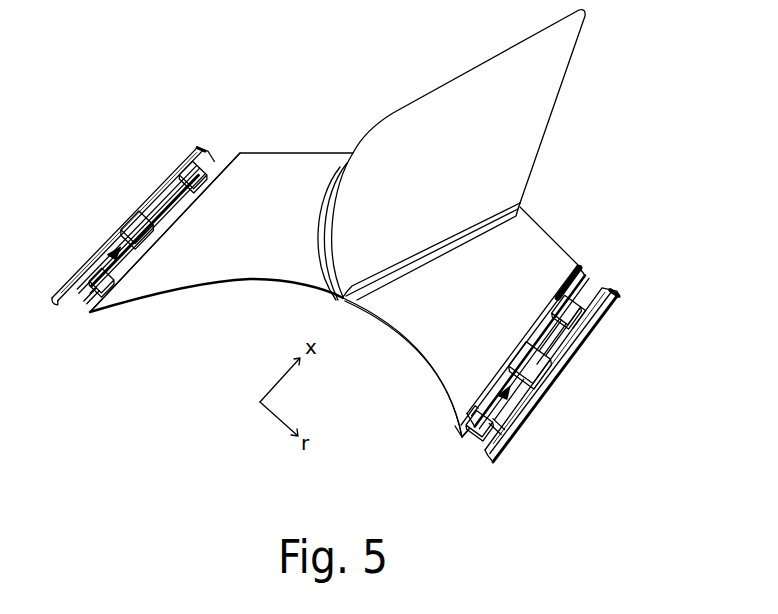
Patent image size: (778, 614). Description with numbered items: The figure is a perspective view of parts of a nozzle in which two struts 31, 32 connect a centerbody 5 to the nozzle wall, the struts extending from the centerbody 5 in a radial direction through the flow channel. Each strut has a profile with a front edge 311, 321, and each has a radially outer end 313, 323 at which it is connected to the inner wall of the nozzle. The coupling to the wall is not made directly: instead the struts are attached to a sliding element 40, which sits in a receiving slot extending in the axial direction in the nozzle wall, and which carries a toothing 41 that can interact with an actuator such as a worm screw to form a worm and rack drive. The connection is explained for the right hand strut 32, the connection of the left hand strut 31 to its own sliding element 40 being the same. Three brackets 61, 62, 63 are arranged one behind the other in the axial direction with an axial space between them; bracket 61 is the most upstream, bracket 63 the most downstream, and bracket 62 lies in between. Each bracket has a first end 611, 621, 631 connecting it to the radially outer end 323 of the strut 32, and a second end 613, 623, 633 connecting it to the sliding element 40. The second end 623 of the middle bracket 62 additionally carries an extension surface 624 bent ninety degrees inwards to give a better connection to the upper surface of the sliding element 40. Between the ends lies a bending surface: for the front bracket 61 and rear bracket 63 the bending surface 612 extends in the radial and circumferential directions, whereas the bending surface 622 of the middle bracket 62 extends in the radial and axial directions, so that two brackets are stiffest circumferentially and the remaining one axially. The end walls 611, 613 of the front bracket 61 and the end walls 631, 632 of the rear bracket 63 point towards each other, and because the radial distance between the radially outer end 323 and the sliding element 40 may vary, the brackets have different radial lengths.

The centerbody 5 is at (532, 144).
The strut 31 is at (195, 270).
The front edge 311 is at (190, 291).
The radially outer end 313 is at (115, 252).
The strut 32 is at (449, 364).
The front edge 321 is at (387, 322).
The radially outer end 323 is at (520, 420).
The sliding element 40 is at (165, 193).
The toothing 41 is at (116, 224).
The bracket 61 is at (317, 419).
The first end 611 is at (482, 400).
The bending surface 612 is at (472, 425).
The second end 613 is at (488, 460).
The bracket 62 is at (385, 334).
The first end 621 is at (510, 370).
The bending surface 622 is at (518, 355).
The second end 623 is at (565, 383).
The extension surface 624 is at (545, 385).
The bracket 63 is at (459, 263).
The first end 631 is at (553, 300).
The end wall 632 is at (566, 290).
The second end 633 is at (577, 313).